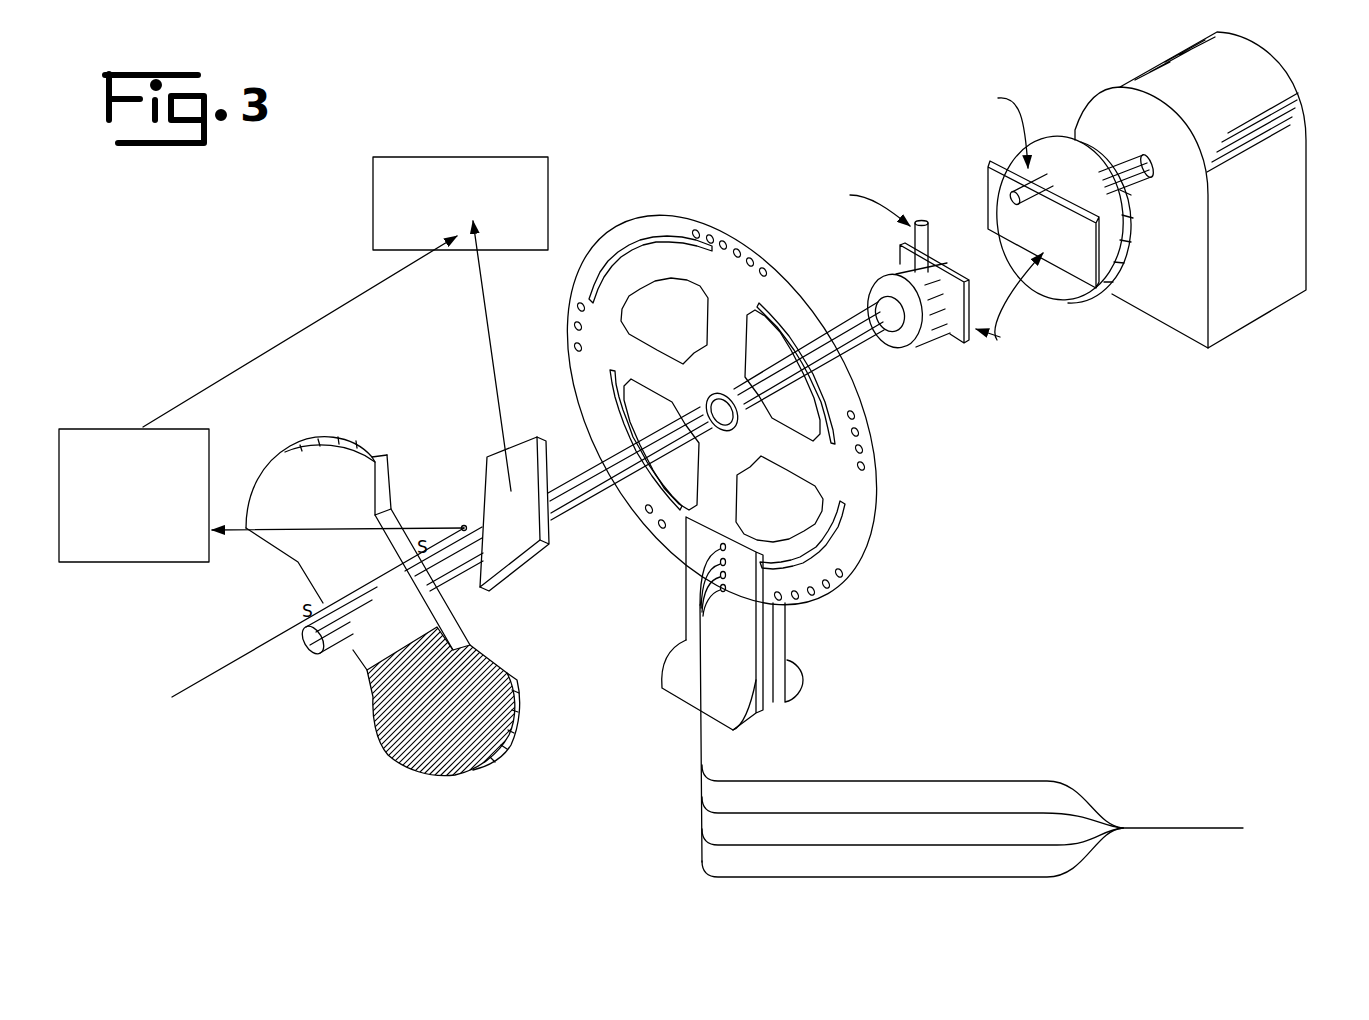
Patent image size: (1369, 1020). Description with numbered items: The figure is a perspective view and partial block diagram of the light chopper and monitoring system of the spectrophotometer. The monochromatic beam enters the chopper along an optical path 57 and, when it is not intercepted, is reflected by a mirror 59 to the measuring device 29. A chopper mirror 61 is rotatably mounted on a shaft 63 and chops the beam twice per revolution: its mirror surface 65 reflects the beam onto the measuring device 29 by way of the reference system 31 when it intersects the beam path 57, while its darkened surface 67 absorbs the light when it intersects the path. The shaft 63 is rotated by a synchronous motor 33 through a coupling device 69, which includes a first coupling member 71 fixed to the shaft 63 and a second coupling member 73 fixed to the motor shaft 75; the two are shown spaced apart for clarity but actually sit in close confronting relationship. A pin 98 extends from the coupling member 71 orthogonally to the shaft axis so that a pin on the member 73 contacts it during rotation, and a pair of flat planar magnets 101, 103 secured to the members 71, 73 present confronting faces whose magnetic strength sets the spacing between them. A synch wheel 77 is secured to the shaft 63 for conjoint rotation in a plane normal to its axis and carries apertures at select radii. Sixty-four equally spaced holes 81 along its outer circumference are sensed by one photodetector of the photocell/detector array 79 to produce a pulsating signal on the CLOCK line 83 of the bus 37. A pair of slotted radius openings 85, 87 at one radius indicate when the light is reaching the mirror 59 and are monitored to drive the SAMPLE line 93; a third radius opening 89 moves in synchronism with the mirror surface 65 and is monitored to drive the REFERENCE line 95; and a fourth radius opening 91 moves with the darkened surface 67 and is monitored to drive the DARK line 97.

The measuring device 29 is at (493, 157).
The reference system 31 is at (105, 429).
The synchronous motor 33 is at (1240, 327).
The bus 37 is at (1195, 828).
The optical path 57 is at (224, 670).
The mirror 59 is at (495, 477).
The chopper mirror 61 is at (460, 678).
The shaft 63 is at (583, 510).
The mirror surface 65 is at (318, 458).
The darkened surface 67 is at (487, 750).
The coupling device 69 is at (960, 281).
The first coupling member 71 is at (933, 330).
The second coupling member 73 is at (1118, 282).
The motor shaft 75 is at (1123, 167).
The synch wheel 77 is at (723, 405).
The photocell/detector array 79 is at (675, 601).
The holes 81 is at (847, 573).
The CLOCK line 83 is at (813, 878).
The slotted radius opening 85 is at (580, 385).
The slotted radius opening 87 is at (835, 398).
The third radius opening 89 is at (642, 237).
The fourth radius opening 91 is at (843, 533).
The SAMPLE line 93 is at (973, 845).
The REFERENCE line 95 is at (995, 818).
The DARK line 97 is at (1015, 781).
The pin member 98 is at (921, 222).
The flat planar magnet 101 is at (963, 307).
The flat planar magnet 103 is at (983, 210).